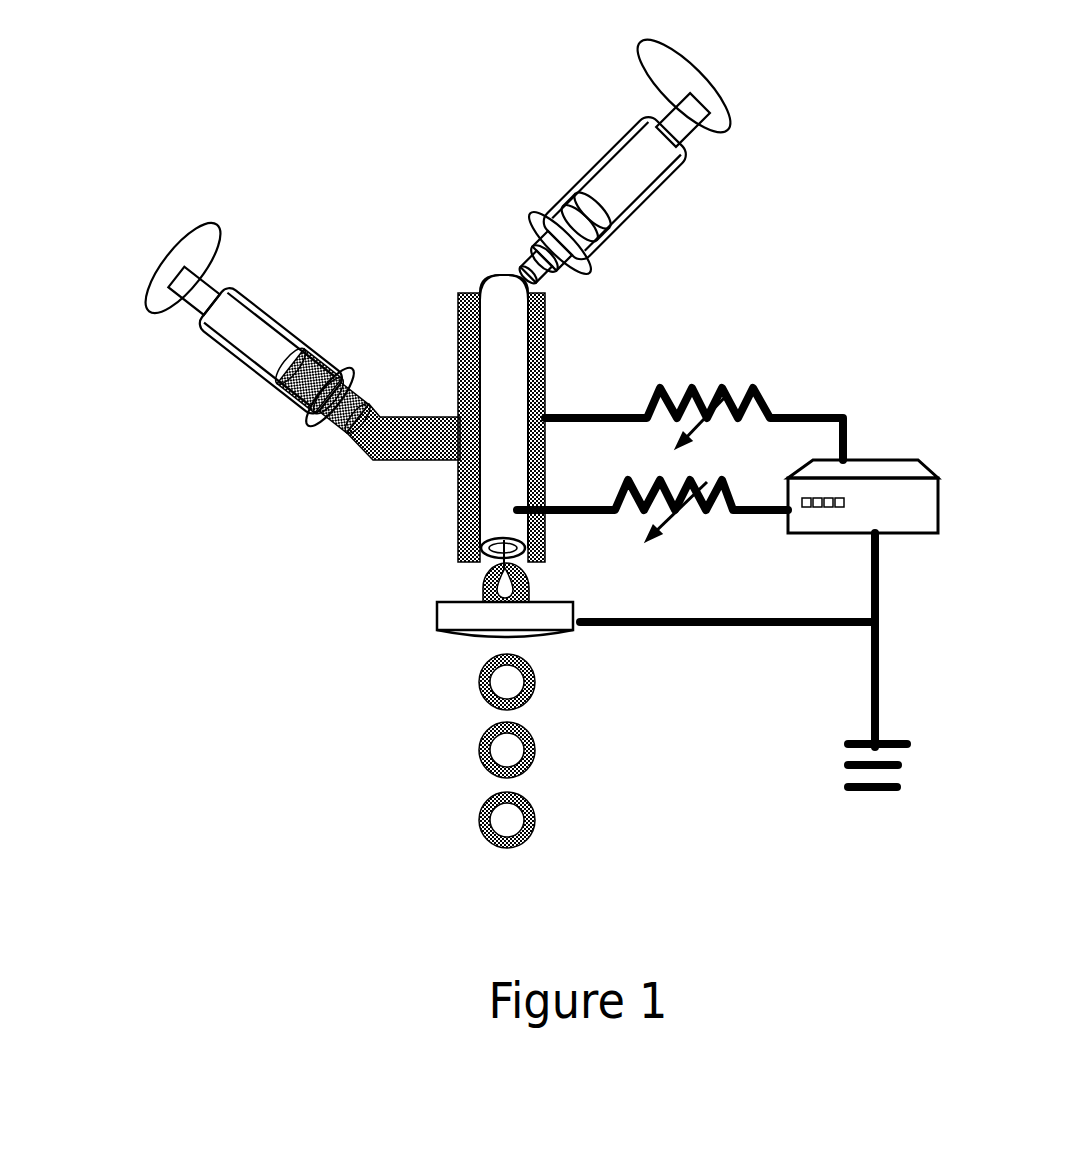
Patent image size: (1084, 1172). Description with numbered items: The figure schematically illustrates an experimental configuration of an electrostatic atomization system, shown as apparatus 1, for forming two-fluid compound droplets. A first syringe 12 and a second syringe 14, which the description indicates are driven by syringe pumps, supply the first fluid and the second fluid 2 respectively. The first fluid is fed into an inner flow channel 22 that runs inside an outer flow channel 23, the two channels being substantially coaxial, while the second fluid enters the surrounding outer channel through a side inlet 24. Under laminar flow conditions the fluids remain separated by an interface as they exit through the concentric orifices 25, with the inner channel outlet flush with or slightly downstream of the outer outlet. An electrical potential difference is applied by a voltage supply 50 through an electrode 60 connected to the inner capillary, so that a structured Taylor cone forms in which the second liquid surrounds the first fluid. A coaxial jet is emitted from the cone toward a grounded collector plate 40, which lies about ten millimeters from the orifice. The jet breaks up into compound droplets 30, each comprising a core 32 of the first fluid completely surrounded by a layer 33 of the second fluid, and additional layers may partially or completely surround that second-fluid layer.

The electrospray apparatus 1 is at (528, 262).
The second fluid 2 is at (317, 423).
The first syringe 12 is at (607, 170).
The second syringe 14 is at (270, 365).
The inner capillary tube 22 is at (482, 318).
The outer housing wall 23 is at (458, 530).
The side inlet tube 24 is at (458, 367).
The orifice 25 is at (458, 558).
The compound droplets 30 is at (497, 677).
The core 32 is at (503, 757).
The layer 33 is at (485, 752).
The collector plate 40 is at (567, 632).
The voltage supply 50 is at (878, 502).
The electrode 60 is at (550, 360).